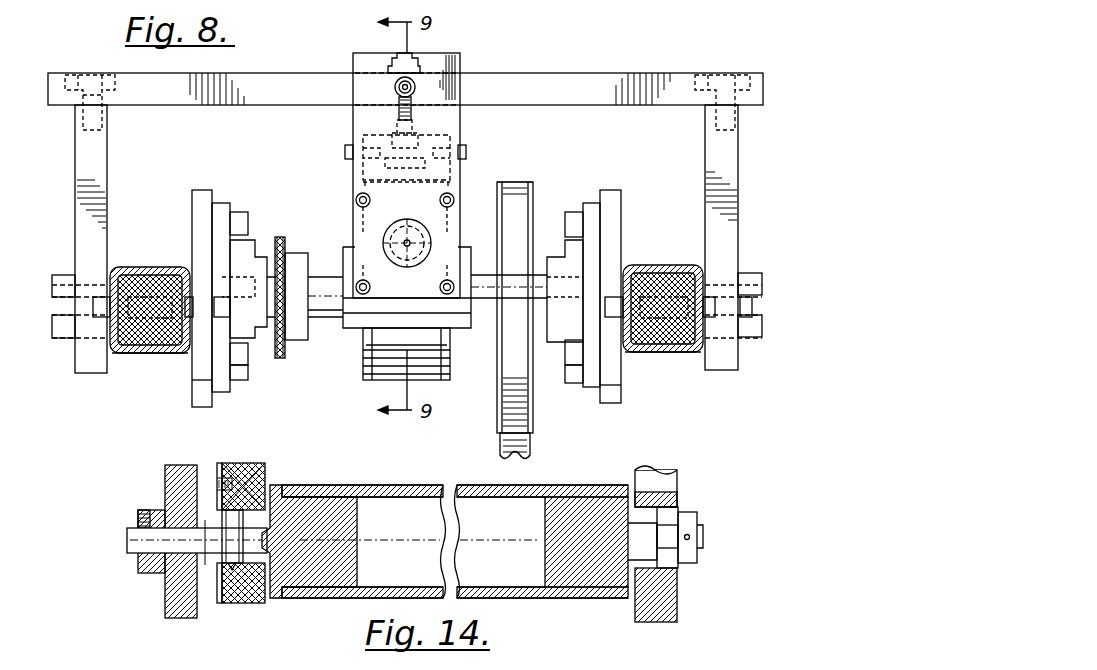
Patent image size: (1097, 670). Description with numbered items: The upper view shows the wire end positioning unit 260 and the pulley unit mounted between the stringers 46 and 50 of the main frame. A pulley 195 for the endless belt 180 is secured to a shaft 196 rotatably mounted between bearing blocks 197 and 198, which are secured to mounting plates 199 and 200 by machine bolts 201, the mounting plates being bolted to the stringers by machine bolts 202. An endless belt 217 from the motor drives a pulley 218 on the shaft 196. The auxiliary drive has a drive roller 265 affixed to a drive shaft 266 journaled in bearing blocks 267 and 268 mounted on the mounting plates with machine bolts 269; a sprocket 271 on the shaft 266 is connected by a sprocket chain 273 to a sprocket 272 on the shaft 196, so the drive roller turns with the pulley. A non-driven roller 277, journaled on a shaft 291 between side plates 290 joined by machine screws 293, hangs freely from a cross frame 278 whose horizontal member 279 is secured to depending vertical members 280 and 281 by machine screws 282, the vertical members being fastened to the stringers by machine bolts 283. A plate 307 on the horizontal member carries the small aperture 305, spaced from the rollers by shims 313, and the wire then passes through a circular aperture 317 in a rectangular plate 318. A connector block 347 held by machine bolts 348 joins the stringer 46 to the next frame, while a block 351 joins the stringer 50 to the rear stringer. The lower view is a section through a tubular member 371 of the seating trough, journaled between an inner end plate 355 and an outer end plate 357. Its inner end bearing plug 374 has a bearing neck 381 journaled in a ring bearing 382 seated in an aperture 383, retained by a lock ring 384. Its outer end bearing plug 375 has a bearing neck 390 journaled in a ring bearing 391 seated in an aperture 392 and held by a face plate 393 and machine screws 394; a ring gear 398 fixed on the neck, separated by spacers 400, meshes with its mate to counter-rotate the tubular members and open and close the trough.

In FIG. 8, the horizontal member 279 is at (237, 73).
In FIG. 8, the cross frame 278 is at (640, 73).
In FIG. 8, the machine screws 282 is at (78, 78).
In FIG. 8, the depending vertical member 280 is at (77, 166).
In FIG. 8, the depending vertical member 281 is at (730, 155).
In FIG. 8, the wire end positioning unit 260 is at (460, 50).
In FIG. 8, the plate 307 is at (447, 100).
In FIG. 8, the side plates 290 is at (355, 140).
In FIG. 8, the machine screws 293 is at (345, 162).
In FIG. 8, the non-driven roller 277 is at (447, 182).
In FIG. 8, the shaft 291 is at (355, 208).
In FIG. 8, the rectangular plate 318 is at (432, 208).
In FIG. 8, the aperture 305 is at (398, 247).
In FIG. 8, the circular aperture 317 is at (404, 250).
In FIG. 8, the drive roller 265 is at (462, 246).
In FIG. 8, the pulley 195 is at (365, 370).
In FIG. 8, the endless belt 180 is at (368, 385).
In FIG. 8, the shaft 196 is at (326, 318).
In FIG. 8, the sprocket 271 is at (298, 260).
In FIG. 8, the sprocket 272 is at (290, 338).
In FIG. 8, the sprocket chain 273 is at (286, 345).
In FIG. 8, the machine bolts 202 is at (246, 297).
In FIG. 8, the mounting plate 199 is at (196, 192).
In FIG. 8, the bearing block 267 is at (220, 203).
In FIG. 8, the machine bolts 269 is at (240, 212).
In FIG. 8, the machine bolts 201 is at (243, 382).
In FIG. 8, the bearing block 197 is at (225, 392).
In FIG. 8, the block 351 is at (152, 282).
In FIG. 8, the stringer 50 is at (136, 356).
In FIG. 8, the machine bolts 348 is at (100, 322).
In FIG. 8, the machine bolts 283 is at (52, 322).
In FIG. 8, the drive shaft 266 is at (490, 300).
In FIG. 8, the pulley 218 is at (497, 420).
In FIG. 8, the endless belt 217 is at (503, 442).
In FIG. 8, the bearing block 268 is at (590, 203).
In FIG. 8, the mounting plate 200 is at (608, 200).
In FIG. 8, the bearing block 198 is at (605, 382).
In FIG. 8, the connector block 347 is at (660, 280).
In FIG. 8, the stringer 46 is at (690, 354).
In FIG. 14, the ring gear 398 is at (163, 586).
In FIG. 14, the bearing neck 390 is at (142, 543).
In FIG. 14, the outer end bearing plug 375 is at (355, 552).
In FIG. 14, the tubular member 371 is at (362, 598).
In FIG. 14, the inner end bearing plug 374 is at (548, 558).
In FIG. 14, the ring bearing 391 is at (265, 480).
In FIG. 14, the machine screws 394 is at (250, 468).
In FIG. 14, the face plate 393 is at (217, 480).
In FIG. 14, the aperture 392 is at (242, 572).
In FIG. 14, the outer end plate 357 is at (233, 598).
In FIG. 14, the spacers 400 is at (206, 568).
In FIG. 14, the shims 313 is at (171, 660).
In FIG. 14, the inner end plate 355 is at (678, 618).
In FIG. 14, the aperture 383 is at (672, 490).
In FIG. 14, the ring bearing 382 is at (672, 525).
In FIG. 14, the lock ring 384 is at (698, 550).
In FIG. 14, the bearing neck 381 is at (660, 540).